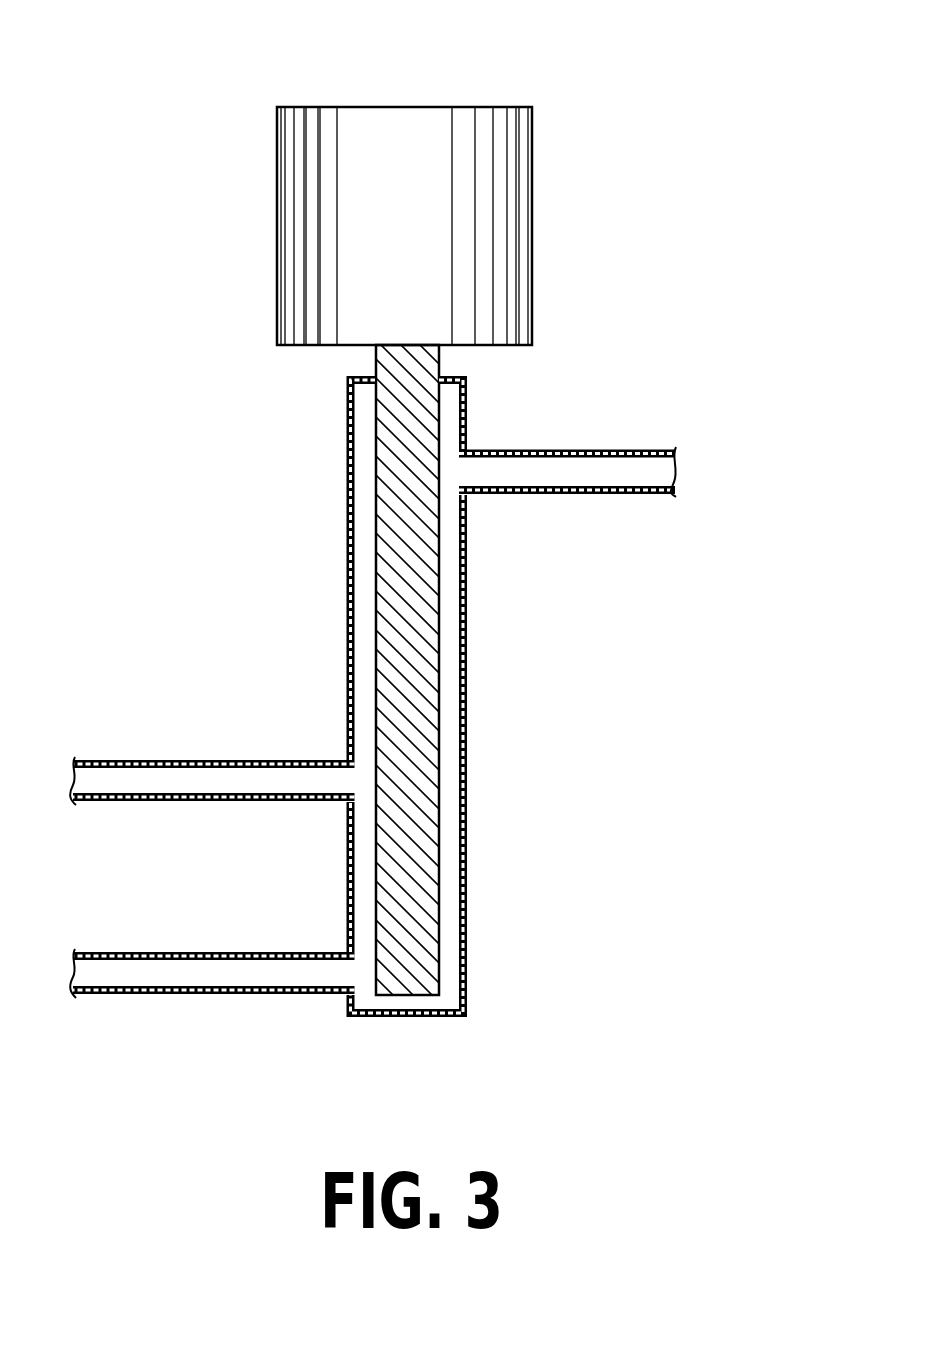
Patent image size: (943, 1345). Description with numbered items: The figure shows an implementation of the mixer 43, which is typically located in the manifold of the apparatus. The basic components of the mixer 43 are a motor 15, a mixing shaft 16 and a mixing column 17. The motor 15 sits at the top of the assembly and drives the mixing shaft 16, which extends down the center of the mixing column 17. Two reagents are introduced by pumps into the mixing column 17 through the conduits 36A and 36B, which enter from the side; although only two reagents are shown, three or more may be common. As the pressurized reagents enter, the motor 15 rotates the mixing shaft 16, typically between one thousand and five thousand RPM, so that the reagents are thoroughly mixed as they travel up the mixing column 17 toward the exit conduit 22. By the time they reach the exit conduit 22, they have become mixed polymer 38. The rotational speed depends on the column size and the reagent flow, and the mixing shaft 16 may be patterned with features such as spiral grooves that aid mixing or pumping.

The motor 15 is at (412, 115).
The mixing shaft 16 is at (408, 435).
The mixing column 17 is at (455, 663).
The exit conduit 22 is at (573, 452).
The mixed polymer 38 is at (615, 470).
The conduit 36A is at (140, 760).
The conduit 36B is at (142, 995).
The mixer 43 is at (670, 822).